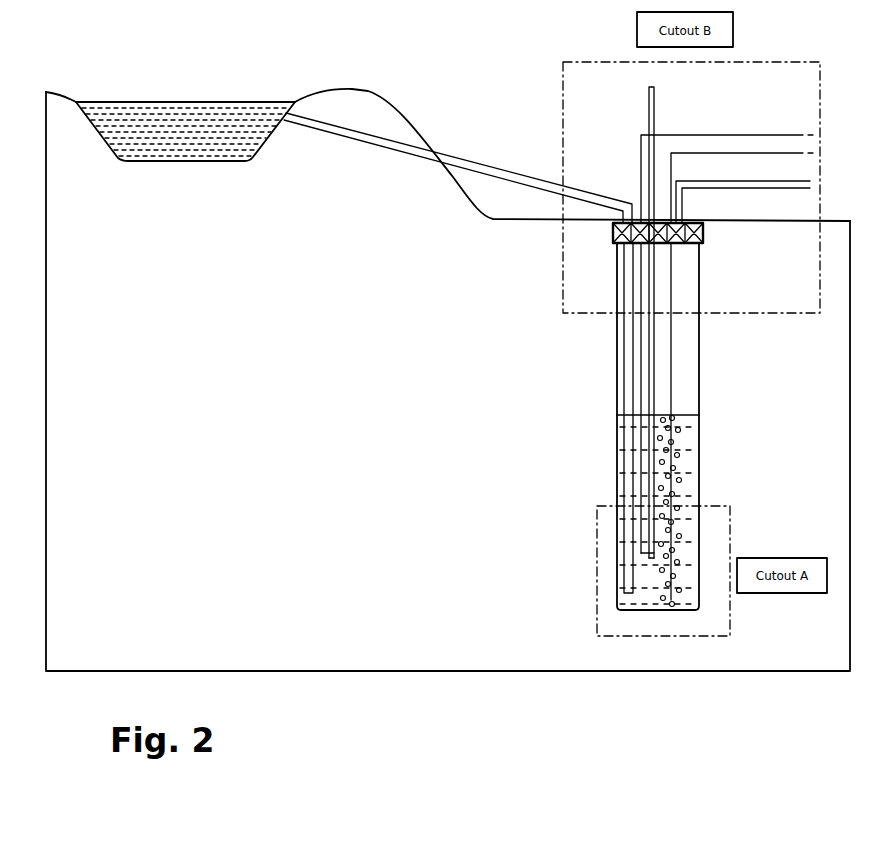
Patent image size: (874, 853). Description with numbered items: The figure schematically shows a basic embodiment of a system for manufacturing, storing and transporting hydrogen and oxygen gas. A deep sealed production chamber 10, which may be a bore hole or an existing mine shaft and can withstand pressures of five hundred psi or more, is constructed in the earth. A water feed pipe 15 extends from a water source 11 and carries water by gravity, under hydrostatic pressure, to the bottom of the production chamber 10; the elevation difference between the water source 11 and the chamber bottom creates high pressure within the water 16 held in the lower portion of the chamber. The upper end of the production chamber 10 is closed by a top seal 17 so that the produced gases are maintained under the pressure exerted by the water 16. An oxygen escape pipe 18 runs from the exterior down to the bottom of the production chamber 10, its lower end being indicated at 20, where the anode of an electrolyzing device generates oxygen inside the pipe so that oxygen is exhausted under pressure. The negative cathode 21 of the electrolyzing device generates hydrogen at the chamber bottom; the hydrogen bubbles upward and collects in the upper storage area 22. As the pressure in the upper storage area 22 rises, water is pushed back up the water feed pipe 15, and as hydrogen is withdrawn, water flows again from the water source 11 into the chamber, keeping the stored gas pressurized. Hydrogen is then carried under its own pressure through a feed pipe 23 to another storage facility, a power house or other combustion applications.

The production chamber 10 is at (699, 408).
The water source 11 is at (147, 102).
The water feed pipe 15 is at (509, 170).
The water 16 is at (665, 588).
The top seal 17 is at (704, 233).
The oxygen escape pipe 18 is at (656, 100).
The bottom of the oxygen escape pipe 20 is at (651, 541).
The negative cathode 21 is at (678, 558).
The upper storage area 22 is at (682, 298).
The feed pipe 23 is at (700, 188).